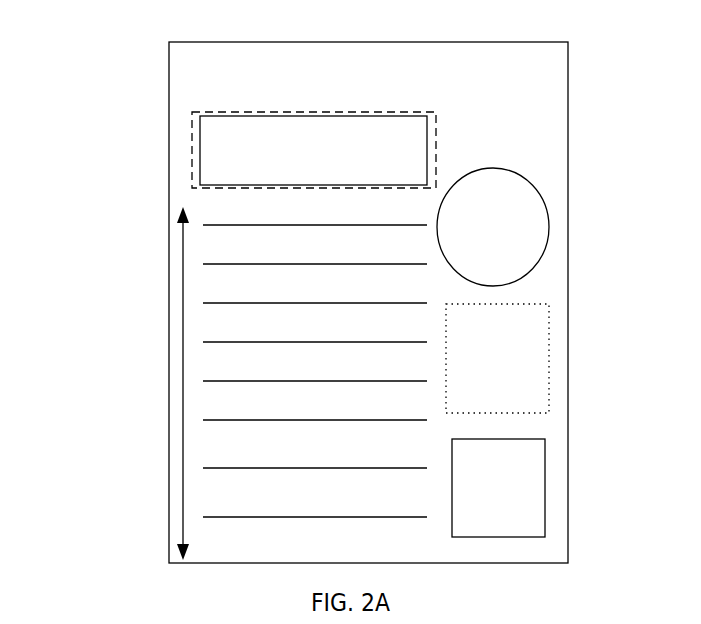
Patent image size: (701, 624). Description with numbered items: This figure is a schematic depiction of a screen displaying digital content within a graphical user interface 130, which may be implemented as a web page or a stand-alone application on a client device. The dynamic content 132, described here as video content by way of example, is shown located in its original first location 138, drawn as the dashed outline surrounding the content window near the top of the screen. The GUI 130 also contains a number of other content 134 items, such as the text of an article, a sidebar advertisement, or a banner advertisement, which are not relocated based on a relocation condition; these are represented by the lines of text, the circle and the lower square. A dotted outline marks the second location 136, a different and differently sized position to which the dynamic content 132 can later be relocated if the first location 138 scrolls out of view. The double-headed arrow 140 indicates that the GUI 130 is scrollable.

The graphical user interface 130 is at (131, 57).
The dynamic content 132 is at (200, 150).
The other content 134 is at (549, 235).
The second location 136 is at (549, 364).
The first location 138 is at (437, 112).
The arrow 140 is at (183, 413).